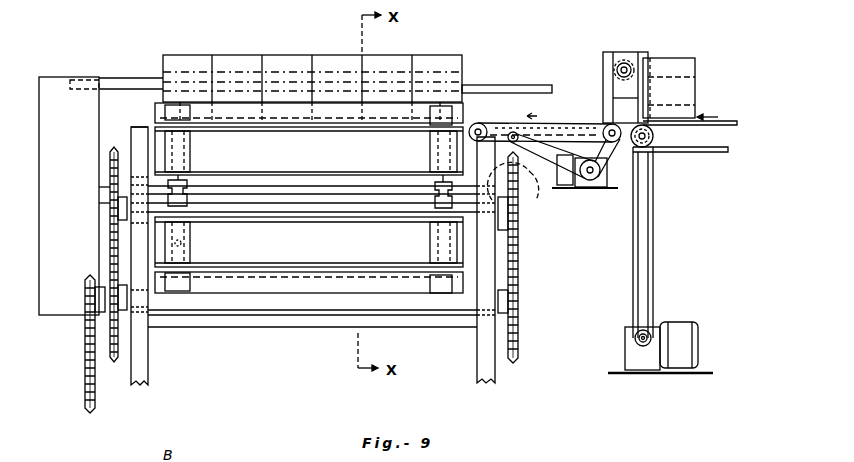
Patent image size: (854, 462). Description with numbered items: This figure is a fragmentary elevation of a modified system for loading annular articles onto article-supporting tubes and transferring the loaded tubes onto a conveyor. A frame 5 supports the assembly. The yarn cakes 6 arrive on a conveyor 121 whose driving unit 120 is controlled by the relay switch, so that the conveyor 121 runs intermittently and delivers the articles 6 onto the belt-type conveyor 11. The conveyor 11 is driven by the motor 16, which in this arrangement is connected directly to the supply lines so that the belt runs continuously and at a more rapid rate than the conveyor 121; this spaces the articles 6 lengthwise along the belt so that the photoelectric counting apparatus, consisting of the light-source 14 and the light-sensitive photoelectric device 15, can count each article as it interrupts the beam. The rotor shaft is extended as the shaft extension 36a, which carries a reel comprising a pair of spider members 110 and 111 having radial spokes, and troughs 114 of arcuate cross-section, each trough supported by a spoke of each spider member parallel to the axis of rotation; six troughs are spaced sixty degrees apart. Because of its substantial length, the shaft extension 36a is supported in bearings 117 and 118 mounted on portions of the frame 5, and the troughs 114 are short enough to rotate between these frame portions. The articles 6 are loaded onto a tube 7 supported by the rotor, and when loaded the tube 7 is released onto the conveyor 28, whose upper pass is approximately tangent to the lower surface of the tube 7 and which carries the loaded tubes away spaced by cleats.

The frame 5 is at (148, 357).
The yarn cakes 6 is at (197, 57).
The tube 7 is at (490, 88).
The belt-type conveyor 11 is at (558, 122).
The light-source 14 is at (616, 72).
The light-sensitive photoelectric device 15 is at (628, 50).
The motor 16 is at (568, 180).
The conveyor 28 is at (105, 242).
The shaft extension 36a is at (279, 196).
The spider member 110 is at (190, 185).
The spider member 111 is at (436, 185).
The troughs 114 is at (346, 122).
The bearing 117 is at (140, 168).
The bearing 118 is at (520, 185).
The driving unit 120 is at (688, 340).
The conveyor 121 is at (690, 152).